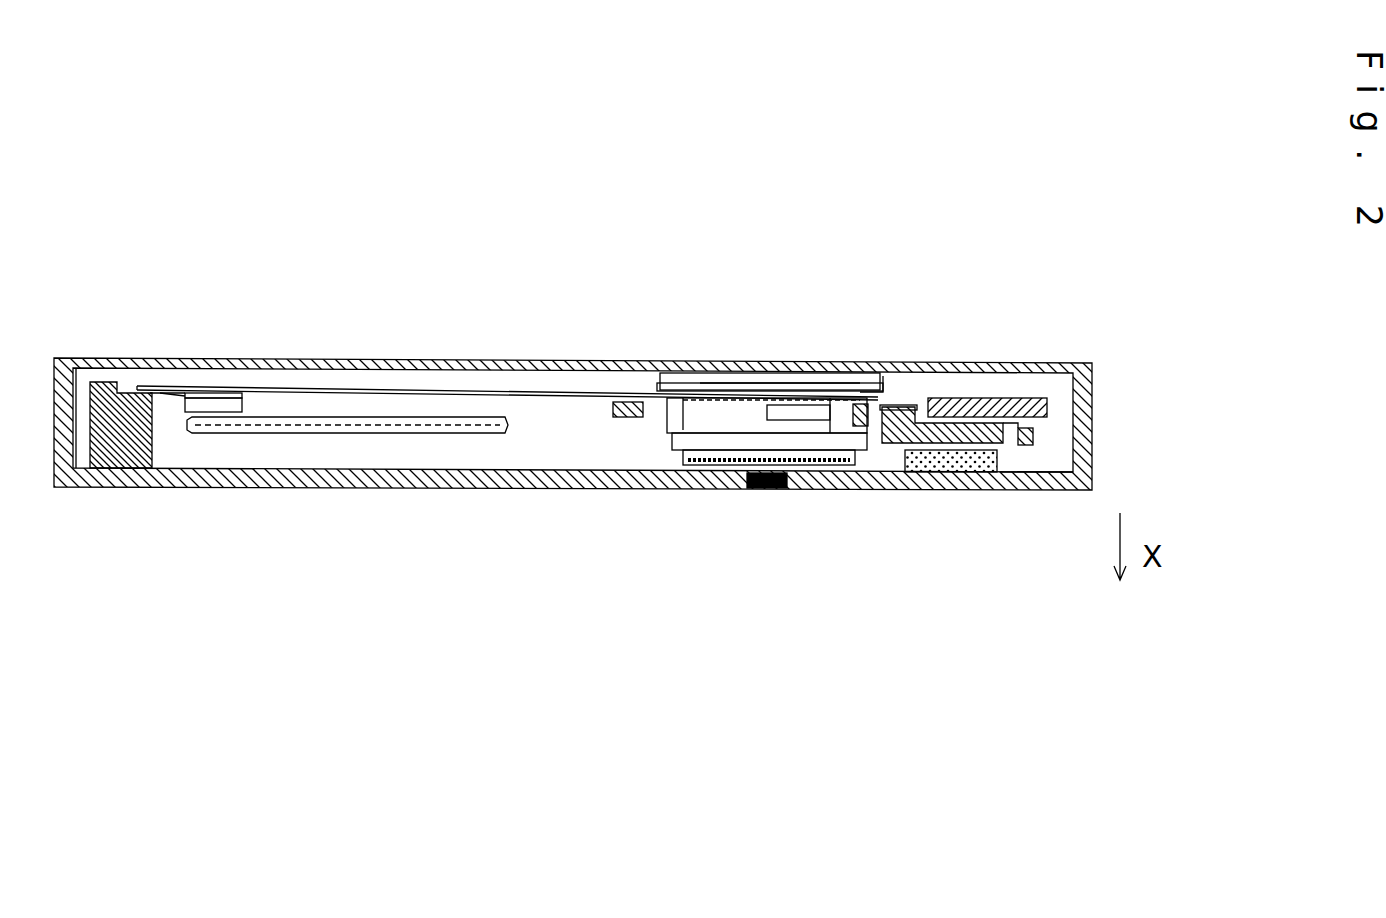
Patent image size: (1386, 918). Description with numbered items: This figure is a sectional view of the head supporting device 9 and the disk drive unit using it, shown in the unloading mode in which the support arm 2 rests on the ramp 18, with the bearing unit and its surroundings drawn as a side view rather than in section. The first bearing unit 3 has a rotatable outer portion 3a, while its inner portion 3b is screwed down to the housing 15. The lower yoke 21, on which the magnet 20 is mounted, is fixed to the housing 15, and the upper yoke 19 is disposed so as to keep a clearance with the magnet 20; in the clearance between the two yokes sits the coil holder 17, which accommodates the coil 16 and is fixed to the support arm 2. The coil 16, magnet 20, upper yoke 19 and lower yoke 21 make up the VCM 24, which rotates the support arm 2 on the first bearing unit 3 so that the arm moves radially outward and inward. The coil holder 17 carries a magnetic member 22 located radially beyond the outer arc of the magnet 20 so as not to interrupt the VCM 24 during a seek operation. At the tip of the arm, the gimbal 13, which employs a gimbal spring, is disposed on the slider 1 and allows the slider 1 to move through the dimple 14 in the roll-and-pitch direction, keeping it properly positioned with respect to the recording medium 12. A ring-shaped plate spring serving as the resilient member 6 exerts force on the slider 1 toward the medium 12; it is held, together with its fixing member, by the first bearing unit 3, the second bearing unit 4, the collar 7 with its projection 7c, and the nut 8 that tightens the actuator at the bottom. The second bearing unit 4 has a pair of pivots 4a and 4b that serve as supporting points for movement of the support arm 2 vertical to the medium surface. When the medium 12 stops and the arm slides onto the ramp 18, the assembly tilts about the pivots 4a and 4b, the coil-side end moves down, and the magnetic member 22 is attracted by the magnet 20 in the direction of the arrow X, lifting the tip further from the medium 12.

The slider 1 is at (195, 390).
The support arm 2 is at (430, 390).
The first bearing unit 3 is at (747, 378).
The outer portion 3a is at (700, 463).
The inner portion 3b is at (728, 470).
The second bearing unit 4 is at (813, 388).
The pivot 4a is at (785, 332).
The pivot 4b is at (772, 397).
The resilient member 6 is at (830, 413).
The collar 7 is at (713, 415).
The projection 7c is at (858, 404).
The nut 8 is at (667, 452).
The head supporting device 9 is at (270, 298).
The recording medium 12 is at (338, 432).
The gimbal 13 is at (250, 396).
The dimple 14 is at (215, 392).
The housing 15 is at (248, 487).
The coil 16 is at (1027, 438).
The coil holder 17 is at (1050, 422).
The ramp 18 is at (128, 462).
The upper yoke 19 is at (1047, 403).
The magnet 20 is at (997, 462).
The lower yoke 21 is at (1043, 485).
The magnetic member 22 is at (1008, 432).
The VCM 24 is at (1092, 401).